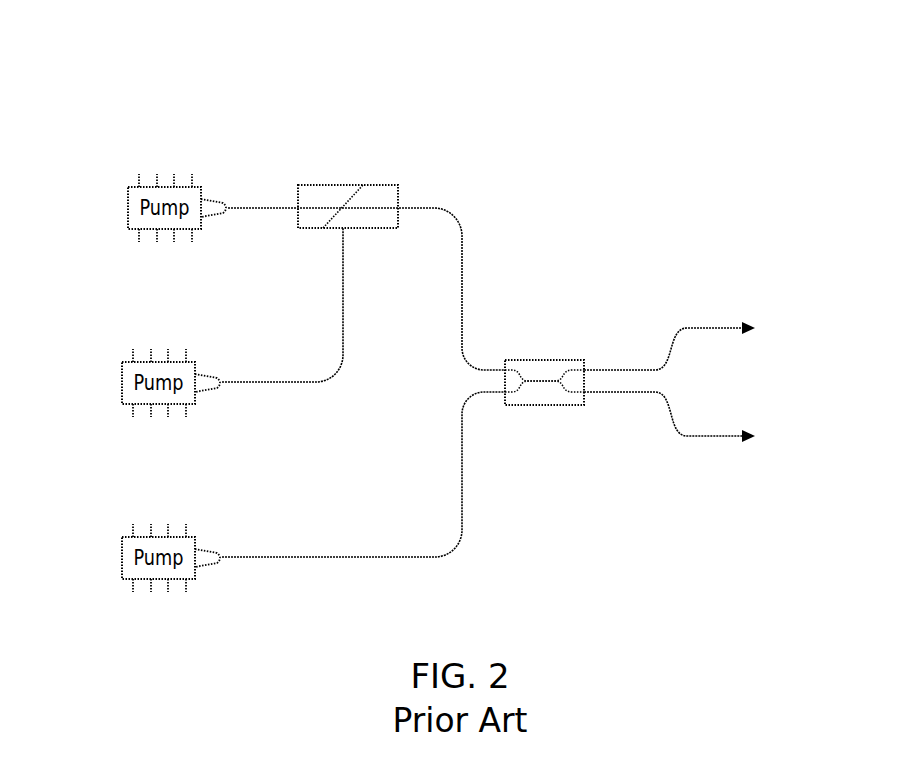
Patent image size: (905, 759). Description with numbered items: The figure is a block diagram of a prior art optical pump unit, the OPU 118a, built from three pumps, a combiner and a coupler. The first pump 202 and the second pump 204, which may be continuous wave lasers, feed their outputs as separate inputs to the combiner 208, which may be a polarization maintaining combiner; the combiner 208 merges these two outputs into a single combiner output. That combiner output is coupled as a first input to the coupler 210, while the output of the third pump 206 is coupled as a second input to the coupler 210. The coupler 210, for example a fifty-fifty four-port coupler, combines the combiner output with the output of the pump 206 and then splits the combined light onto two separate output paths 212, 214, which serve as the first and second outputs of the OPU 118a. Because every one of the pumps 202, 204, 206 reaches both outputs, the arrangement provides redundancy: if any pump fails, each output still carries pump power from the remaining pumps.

The OPU 118a is at (334, 80).
The first pump 202 is at (128, 195).
The second pump 204 is at (122, 375).
The pump 206 is at (122, 550).
The combiner 208 is at (398, 193).
The coupler 210 is at (547, 405).
The output path 212 is at (713, 322).
The output path 214 is at (713, 437).